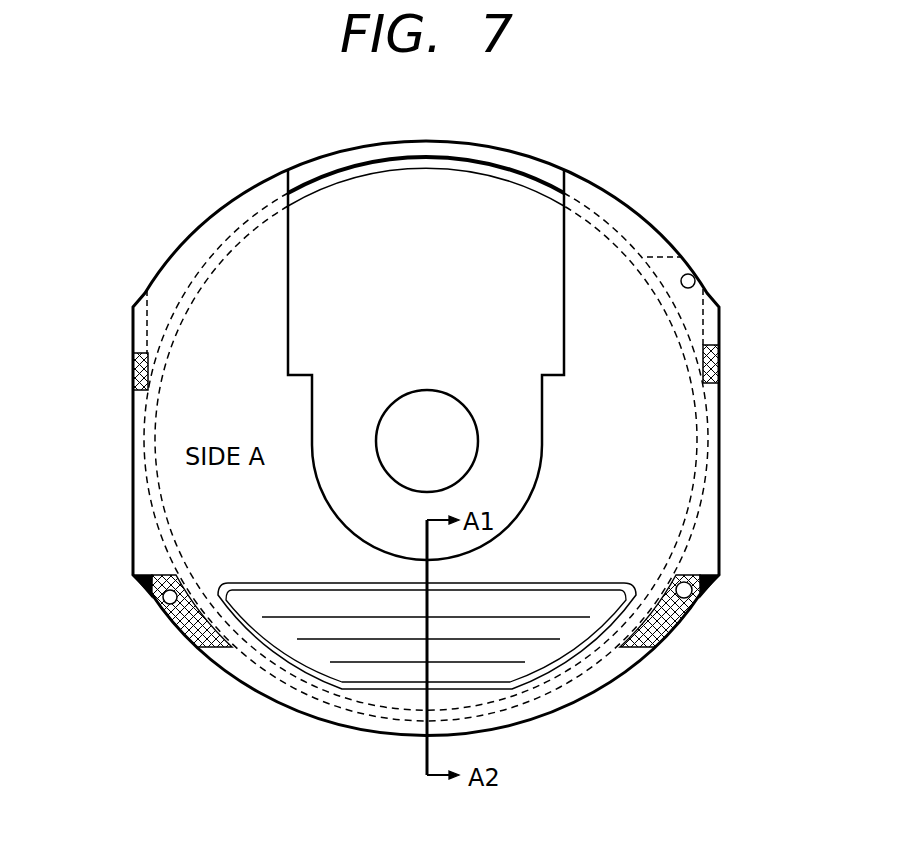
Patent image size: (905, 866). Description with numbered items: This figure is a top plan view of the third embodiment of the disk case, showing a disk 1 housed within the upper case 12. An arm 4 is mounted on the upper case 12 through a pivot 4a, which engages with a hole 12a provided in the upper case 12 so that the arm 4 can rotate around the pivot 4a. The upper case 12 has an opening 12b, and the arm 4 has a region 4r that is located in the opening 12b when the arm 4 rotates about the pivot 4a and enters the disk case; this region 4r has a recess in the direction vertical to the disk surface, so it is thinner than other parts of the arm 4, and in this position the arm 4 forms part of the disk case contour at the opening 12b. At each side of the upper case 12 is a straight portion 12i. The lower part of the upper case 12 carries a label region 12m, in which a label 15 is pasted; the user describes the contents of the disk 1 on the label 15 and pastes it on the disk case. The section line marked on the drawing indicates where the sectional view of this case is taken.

The disk 1 is at (375, 183).
The arm 4 is at (315, 158).
The region of the arm 4r is at (514, 168).
The pivot of the arm 4a is at (690, 273).
The upper case 12 is at (252, 262).
The hole 12a is at (696, 287).
The opening 12b is at (562, 268).
The straight portion 12i is at (719, 437).
The label region 12m is at (582, 660).
The label 15 is at (308, 655).